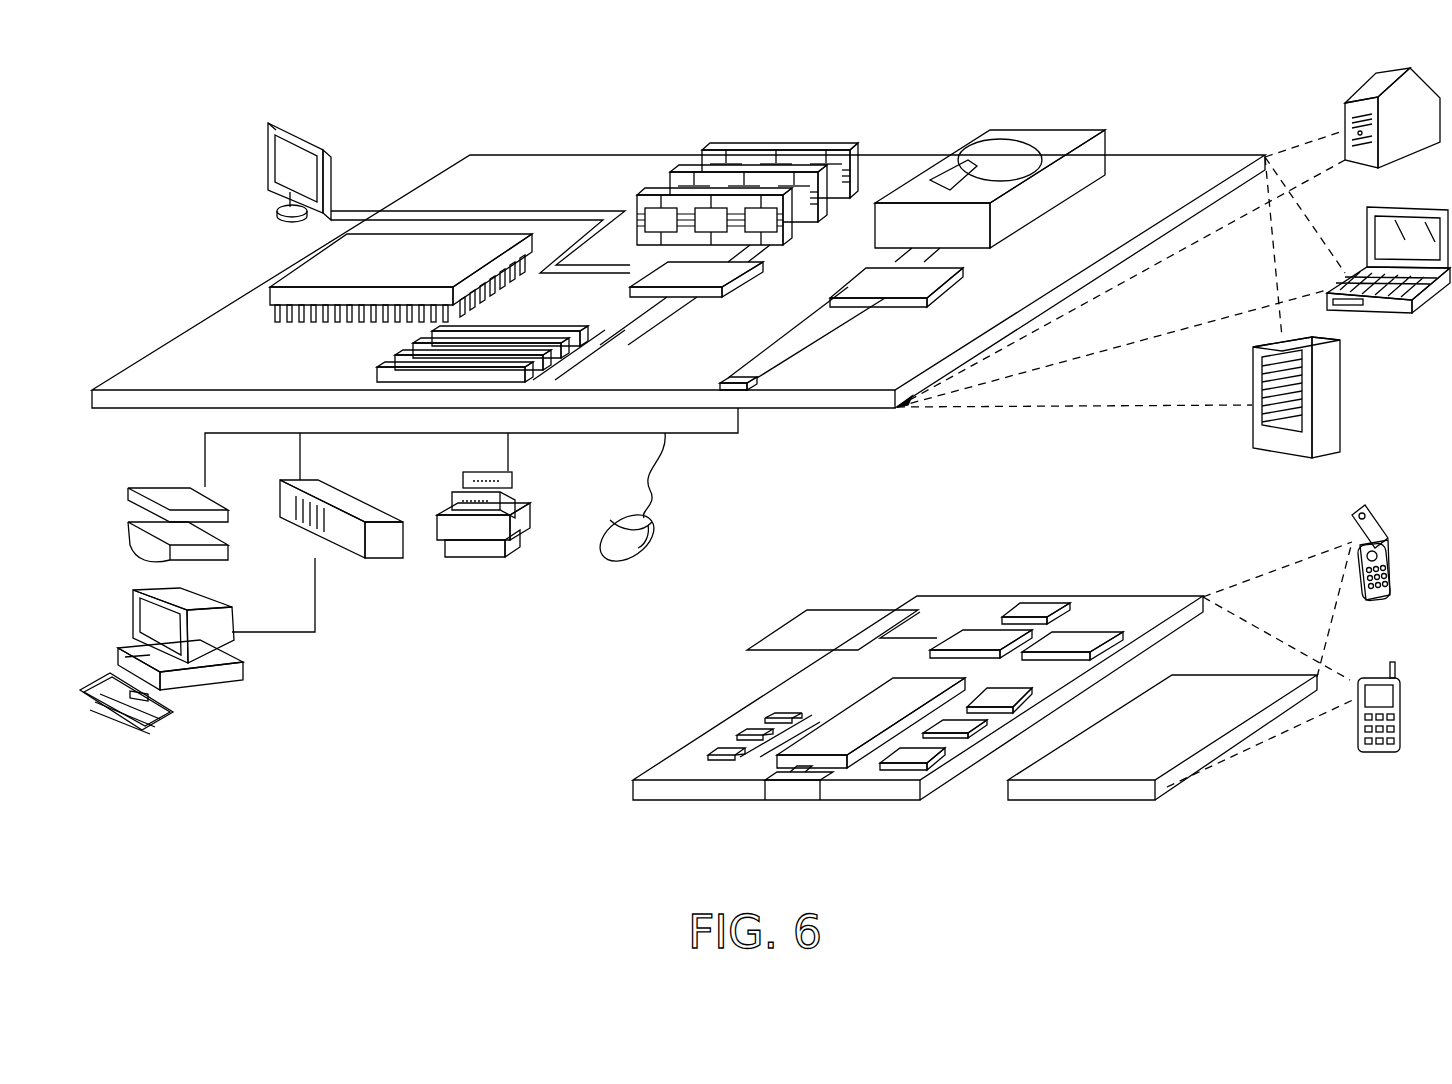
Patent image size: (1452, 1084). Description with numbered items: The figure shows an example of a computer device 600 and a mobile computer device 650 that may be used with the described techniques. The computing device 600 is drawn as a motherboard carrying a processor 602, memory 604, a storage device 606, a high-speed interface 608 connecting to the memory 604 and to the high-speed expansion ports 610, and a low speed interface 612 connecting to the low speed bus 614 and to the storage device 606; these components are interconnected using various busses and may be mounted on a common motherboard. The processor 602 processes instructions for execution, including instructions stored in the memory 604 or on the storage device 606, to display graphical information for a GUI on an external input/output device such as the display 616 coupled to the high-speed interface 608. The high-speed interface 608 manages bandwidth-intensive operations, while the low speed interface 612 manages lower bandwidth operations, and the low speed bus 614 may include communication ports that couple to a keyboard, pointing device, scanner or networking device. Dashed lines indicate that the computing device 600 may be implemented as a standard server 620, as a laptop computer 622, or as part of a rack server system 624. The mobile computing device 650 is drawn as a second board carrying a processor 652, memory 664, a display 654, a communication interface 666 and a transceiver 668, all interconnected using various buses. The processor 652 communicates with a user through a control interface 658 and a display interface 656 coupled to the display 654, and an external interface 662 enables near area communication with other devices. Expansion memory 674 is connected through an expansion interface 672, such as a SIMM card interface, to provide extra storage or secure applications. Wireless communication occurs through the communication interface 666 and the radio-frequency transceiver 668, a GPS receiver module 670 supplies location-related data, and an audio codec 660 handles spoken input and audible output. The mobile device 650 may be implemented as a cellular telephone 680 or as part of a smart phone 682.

The computing device 600 is at (408, 96).
The processor 602 is at (294, 266).
The memory 604 is at (783, 150).
The storage device 606 is at (1034, 130).
The high-speed interface 608 is at (712, 272).
The high-speed expansion ports 610 is at (400, 352).
The low speed interface 612 is at (864, 277).
The low speed bus 614 is at (742, 380).
The display 616 is at (268, 122).
The standard server 620 is at (1370, 98).
The laptop computer 622 is at (1427, 207).
The rack server system 624 is at (1342, 395).
The mobile computer device 650 is at (582, 808).
The processor 652 is at (833, 728).
The display 654 is at (1205, 692).
The display interface 656 is at (930, 760).
The control interface 658 is at (963, 727).
The audio codec 660 is at (1005, 692).
The external interface 662 is at (794, 794).
The memory 664 is at (745, 735).
The communication interface 666 is at (980, 632).
The transceiver 668 is at (1080, 633).
The GPS receiver module 670 is at (1038, 606).
The expansion interface 672 is at (897, 610).
The expansion memory 674 is at (808, 610).
The cellular telephone 680 is at (1363, 512).
The smart phone 682 is at (1373, 678).